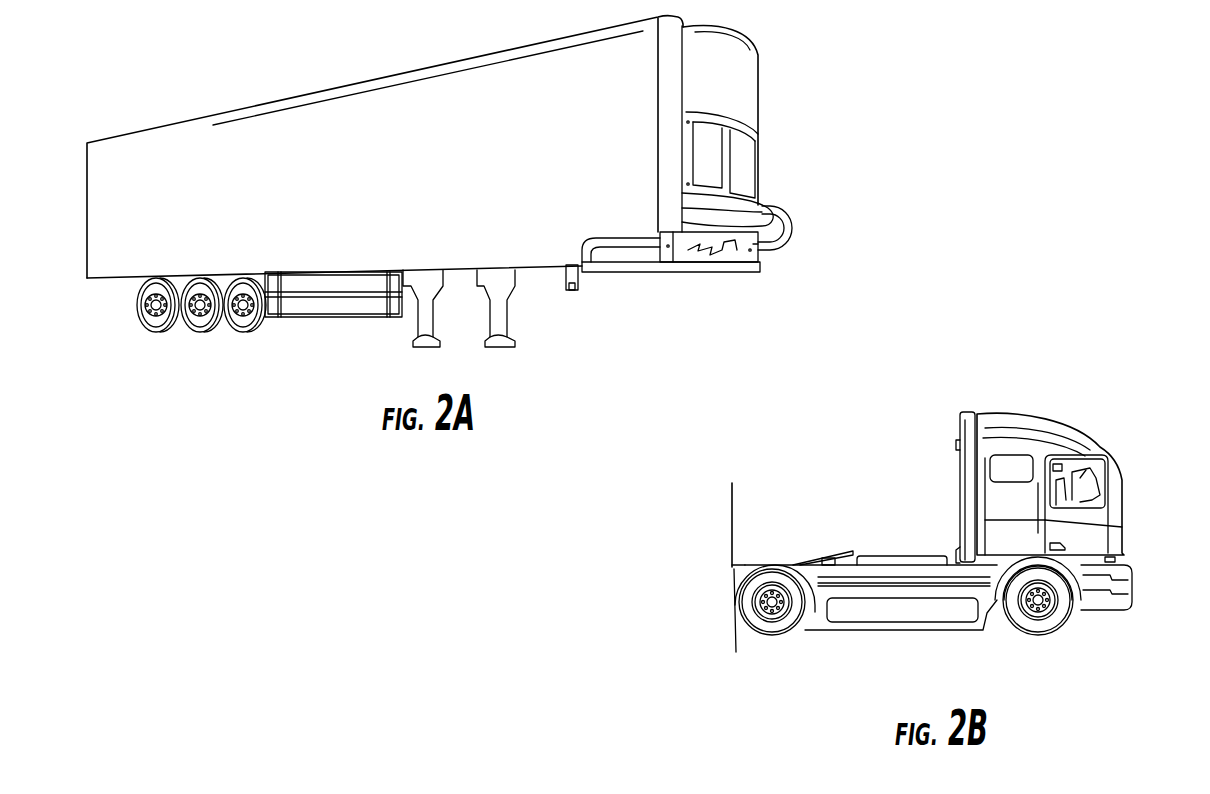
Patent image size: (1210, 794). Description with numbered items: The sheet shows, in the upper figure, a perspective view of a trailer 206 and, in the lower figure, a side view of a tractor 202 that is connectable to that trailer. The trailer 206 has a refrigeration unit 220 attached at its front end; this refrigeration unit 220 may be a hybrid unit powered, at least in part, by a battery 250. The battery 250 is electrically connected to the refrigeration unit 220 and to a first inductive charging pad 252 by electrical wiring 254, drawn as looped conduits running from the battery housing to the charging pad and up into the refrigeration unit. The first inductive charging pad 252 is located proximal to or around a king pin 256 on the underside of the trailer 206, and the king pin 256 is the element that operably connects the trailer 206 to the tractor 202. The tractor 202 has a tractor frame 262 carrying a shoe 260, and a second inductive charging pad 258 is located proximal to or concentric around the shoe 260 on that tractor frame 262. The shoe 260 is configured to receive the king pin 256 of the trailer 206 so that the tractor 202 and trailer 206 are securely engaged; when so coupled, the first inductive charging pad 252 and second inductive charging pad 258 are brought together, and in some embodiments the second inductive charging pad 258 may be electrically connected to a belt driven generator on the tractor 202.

In FIG. 2A, the trailer 206 is at (253, 132).
In FIG. 2A, the refrigeration unit 220 is at (760, 95).
In FIG. 2A, the battery 250 is at (718, 255).
In FIG. 2A, the first inductive charging pad 252 is at (610, 272).
In FIG. 2A, the electrical wiring 254 is at (620, 235).
In FIG. 2A, the king pin 256 is at (572, 292).
In FIG. 2B, the tractor 202 is at (1082, 442).
In FIG. 2B, the second inductive charging pad 258 is at (915, 555).
In FIG. 2B, the shoe 260 is at (822, 553).
In FIG. 2B, the tractor frame 262 is at (885, 627).